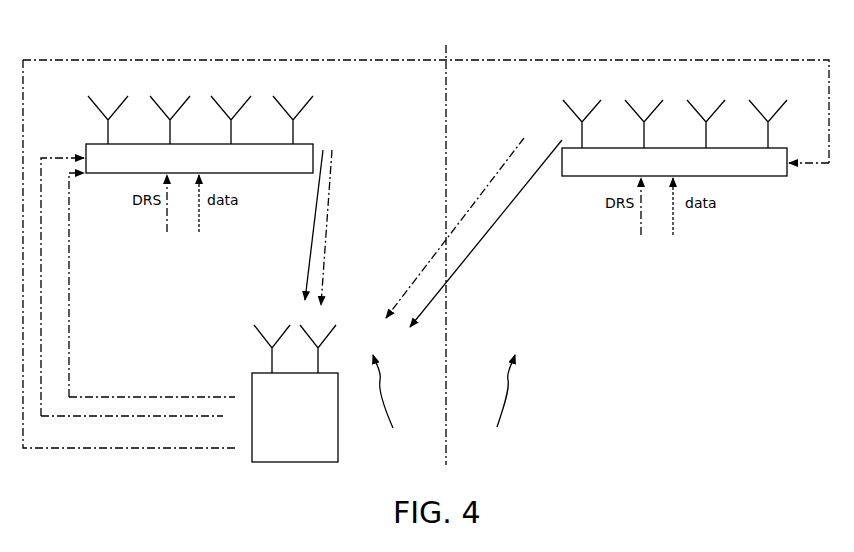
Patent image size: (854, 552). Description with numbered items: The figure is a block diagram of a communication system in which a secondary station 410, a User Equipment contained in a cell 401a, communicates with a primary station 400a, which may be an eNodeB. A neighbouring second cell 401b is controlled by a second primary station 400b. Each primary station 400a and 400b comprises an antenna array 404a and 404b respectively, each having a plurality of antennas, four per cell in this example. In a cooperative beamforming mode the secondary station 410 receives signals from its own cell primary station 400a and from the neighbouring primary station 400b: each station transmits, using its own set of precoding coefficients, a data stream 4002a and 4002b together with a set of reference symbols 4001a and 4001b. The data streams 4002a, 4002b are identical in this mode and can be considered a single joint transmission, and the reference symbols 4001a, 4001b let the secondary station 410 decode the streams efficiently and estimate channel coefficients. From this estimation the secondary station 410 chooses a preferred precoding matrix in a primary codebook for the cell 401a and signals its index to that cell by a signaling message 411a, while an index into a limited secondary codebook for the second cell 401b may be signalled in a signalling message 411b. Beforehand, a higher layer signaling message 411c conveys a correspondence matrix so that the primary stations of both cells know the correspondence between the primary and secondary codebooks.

The primary station 400a is at (199, 158).
The primary station 400b is at (674, 162).
The antenna array 404a is at (276, 98).
The antenna array 404b is at (626, 98).
The secondary station 410 is at (295, 393).
The signaling message 411a is at (143, 416).
The signalling message 411b is at (148, 450).
The signaling message 411c is at (70, 327).
The reference symbols 4001a is at (331, 217).
The reference symbols 4001b is at (476, 200).
The data stream 4002a is at (310, 238).
The data stream 4002b is at (492, 227).
The cell 401a is at (403, 400).
The cell 401b is at (488, 400).